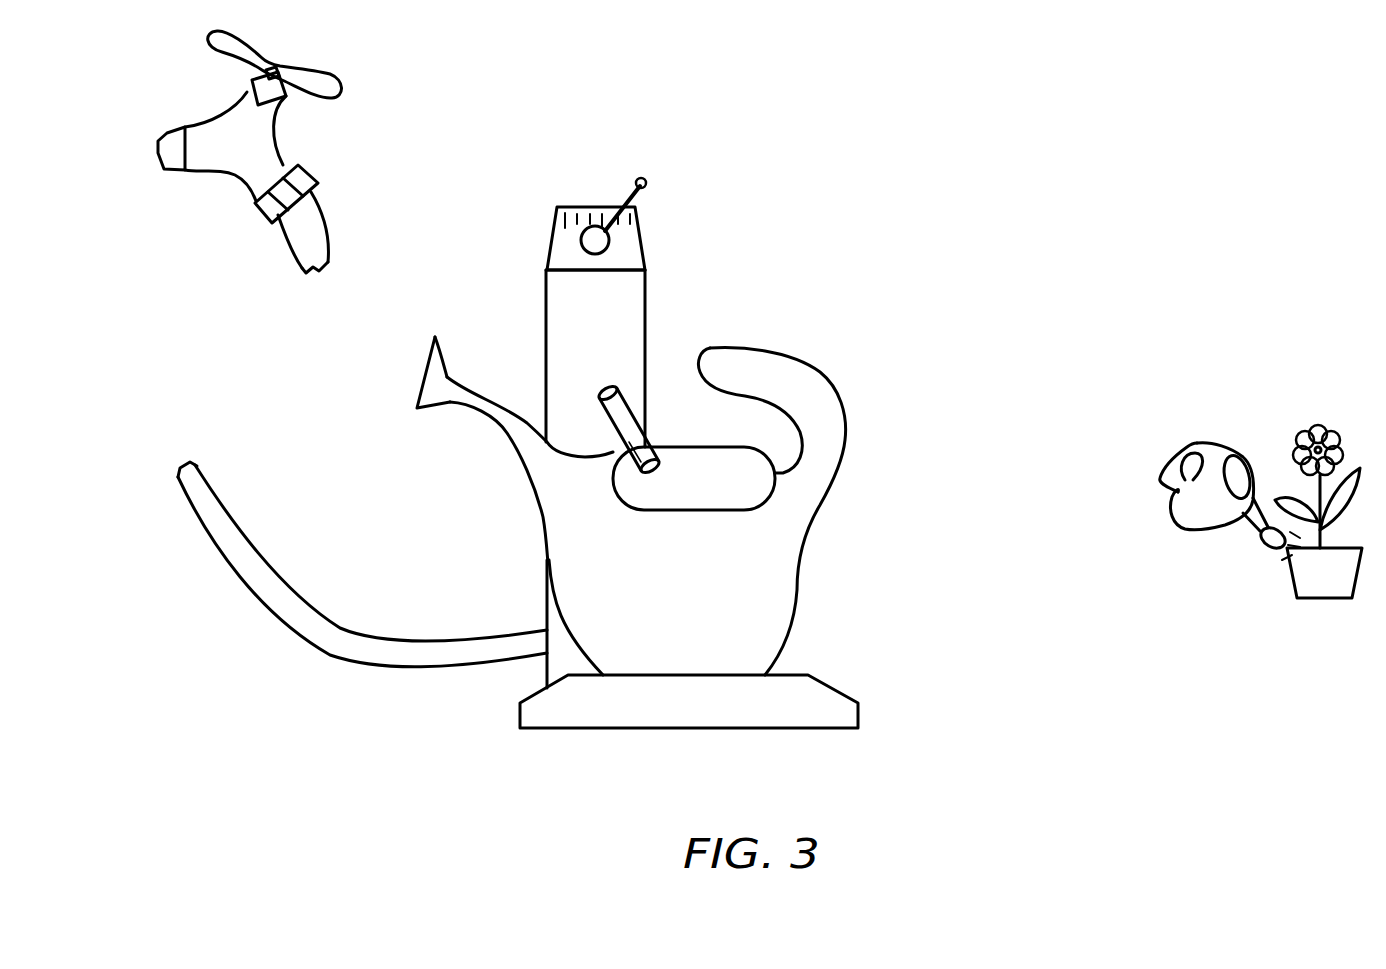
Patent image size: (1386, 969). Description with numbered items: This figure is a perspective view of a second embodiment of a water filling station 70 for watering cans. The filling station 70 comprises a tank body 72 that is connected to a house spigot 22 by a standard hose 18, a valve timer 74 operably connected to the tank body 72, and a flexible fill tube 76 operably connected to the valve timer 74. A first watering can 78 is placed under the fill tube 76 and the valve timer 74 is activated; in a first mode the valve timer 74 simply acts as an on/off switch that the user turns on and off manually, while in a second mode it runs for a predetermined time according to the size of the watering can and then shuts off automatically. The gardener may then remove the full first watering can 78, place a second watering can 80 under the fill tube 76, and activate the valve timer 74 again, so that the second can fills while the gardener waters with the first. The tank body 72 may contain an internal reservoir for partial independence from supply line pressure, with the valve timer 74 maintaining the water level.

The standard hose 18 is at (348, 640).
The house spigot 22 is at (217, 137).
The filling station 70 is at (890, 145).
The tank body 72 is at (565, 335).
The valve timer 74 is at (552, 238).
The flexible fill tube 76 is at (627, 402).
The first watering can 78 is at (780, 589).
The second watering can 80 is at (1185, 530).